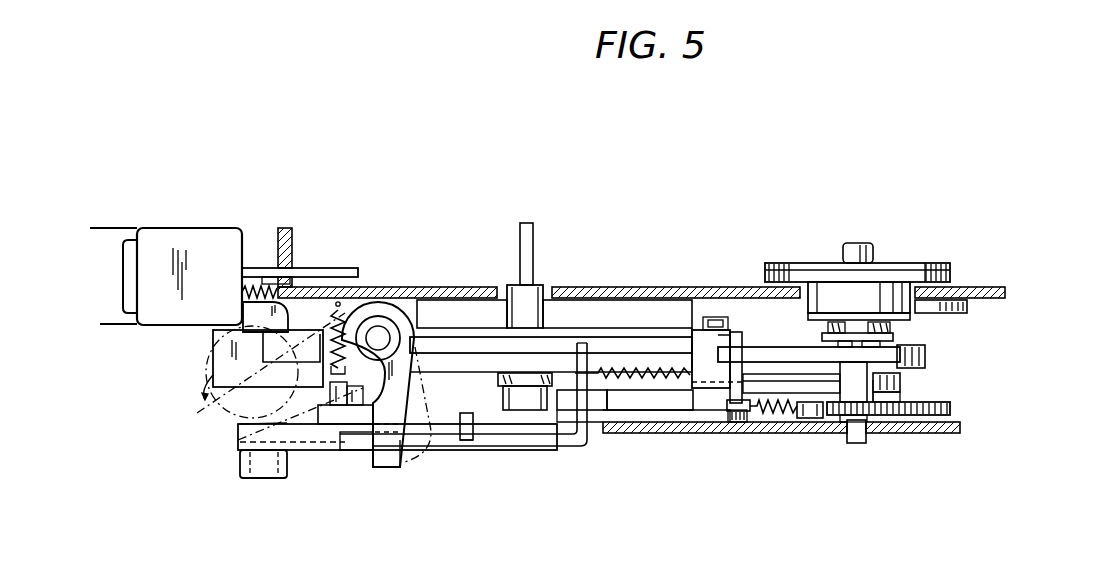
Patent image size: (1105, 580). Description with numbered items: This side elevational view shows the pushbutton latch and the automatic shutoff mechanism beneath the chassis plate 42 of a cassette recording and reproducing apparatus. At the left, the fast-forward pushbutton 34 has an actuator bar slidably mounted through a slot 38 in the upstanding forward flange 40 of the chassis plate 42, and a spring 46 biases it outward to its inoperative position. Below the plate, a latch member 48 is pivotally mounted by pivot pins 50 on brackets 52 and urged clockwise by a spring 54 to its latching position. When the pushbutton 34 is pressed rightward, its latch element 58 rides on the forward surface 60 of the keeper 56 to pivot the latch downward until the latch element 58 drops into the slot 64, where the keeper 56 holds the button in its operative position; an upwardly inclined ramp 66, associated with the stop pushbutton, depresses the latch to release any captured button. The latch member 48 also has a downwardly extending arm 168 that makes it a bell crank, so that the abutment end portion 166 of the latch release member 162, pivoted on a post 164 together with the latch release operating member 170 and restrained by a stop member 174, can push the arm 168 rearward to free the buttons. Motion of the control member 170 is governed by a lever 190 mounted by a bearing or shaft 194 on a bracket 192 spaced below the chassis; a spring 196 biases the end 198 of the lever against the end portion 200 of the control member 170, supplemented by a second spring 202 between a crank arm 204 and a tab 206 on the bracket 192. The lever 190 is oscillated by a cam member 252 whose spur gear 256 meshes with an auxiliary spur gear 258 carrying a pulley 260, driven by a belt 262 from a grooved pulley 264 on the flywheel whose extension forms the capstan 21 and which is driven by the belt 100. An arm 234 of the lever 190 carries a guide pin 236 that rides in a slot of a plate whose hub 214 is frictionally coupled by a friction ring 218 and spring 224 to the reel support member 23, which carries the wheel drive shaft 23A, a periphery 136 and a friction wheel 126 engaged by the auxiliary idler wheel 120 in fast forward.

The capstan 21 is at (535, 238).
The reel support member 23 is at (942, 265).
The wheel drive shaft 23A is at (875, 256).
The pushbutton 34 is at (152, 269).
The slot 38 is at (291, 250).
The upstanding forward flange 40 is at (284, 228).
The chassis plate 42 is at (395, 287).
The spring 46 is at (252, 284).
The latch member 48 is at (287, 423).
The pivot pin 50 is at (397, 322).
The bracket 52 is at (417, 317).
The spring 54 is at (371, 304).
The keeper 56 is at (212, 366).
The latch element 58 is at (262, 330).
The forward surface 60 is at (215, 349).
The slot 64 is at (269, 380).
The ramp 66 is at (329, 326).
The belt 100 is at (548, 346).
The auxiliary idler wheel 120 is at (968, 307).
The friction wheel 126 is at (828, 297).
The periphery 136 is at (950, 275).
The latch release member 162 is at (285, 451).
The post 164 is at (344, 402).
The abutment end portion 166 is at (354, 450).
The downwardly extending arm 168 is at (387, 467).
The latch release operating member 170 is at (473, 443).
The stop member 174 is at (473, 413).
The lever 190 is at (680, 411).
The bracket 192 is at (731, 434).
The bearing or shaft 194 is at (698, 338).
The spring 196 is at (620, 370).
The end 198 is at (598, 411).
The end portion 200 is at (589, 447).
The second spring 202 is at (780, 414).
The crank arm 204 is at (739, 412).
The tab 206 is at (856, 444).
The hub 214 is at (897, 355).
The friction ring 218 is at (810, 317).
The spring 224 is at (878, 331).
The arm 234 is at (900, 380).
The guide pin 236 is at (830, 337).
The cam member 252 is at (926, 362).
The spur gear 256 is at (951, 409).
The auxiliary spur gear 258 is at (815, 418).
The pulley 260 is at (897, 395).
The belt 262 is at (878, 390).
The grooved pulley 264 is at (549, 410).